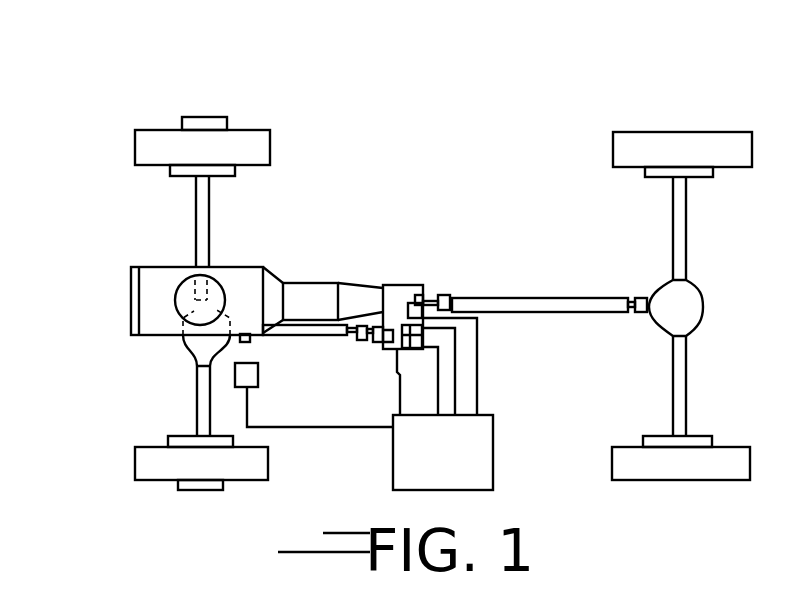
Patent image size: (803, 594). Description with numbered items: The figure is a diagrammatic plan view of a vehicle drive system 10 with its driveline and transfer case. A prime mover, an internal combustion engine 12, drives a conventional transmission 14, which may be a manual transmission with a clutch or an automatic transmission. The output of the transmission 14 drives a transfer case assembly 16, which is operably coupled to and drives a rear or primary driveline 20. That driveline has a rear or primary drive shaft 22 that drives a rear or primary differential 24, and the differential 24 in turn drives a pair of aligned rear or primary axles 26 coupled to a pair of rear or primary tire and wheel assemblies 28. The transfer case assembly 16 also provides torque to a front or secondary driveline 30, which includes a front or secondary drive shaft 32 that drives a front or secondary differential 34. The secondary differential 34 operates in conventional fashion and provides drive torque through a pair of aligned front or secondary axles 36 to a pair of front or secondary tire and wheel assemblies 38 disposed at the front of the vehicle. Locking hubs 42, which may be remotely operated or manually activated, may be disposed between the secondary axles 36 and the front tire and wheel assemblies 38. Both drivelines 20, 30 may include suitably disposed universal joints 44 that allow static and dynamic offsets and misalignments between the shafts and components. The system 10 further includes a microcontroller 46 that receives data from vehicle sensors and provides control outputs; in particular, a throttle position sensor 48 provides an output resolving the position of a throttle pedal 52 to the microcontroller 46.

The vehicle drive system 10 is at (430, 102).
The internal combustion engine 12 is at (233, 280).
The transmission 14 is at (307, 292).
The transfer case assembly 16 is at (400, 277).
The rear or primary driveline 20 is at (582, 212).
The rear or primary drive shaft 22 is at (547, 313).
The rear or primary differential 24 is at (695, 305).
The rear or primary axles 26 is at (688, 212).
The rear or primary tire and wheel assemblies 28 is at (657, 126).
The front or secondary driveline 30 is at (153, 377).
The front or secondary drive shaft 32 is at (328, 337).
The front or secondary differential 34 is at (198, 343).
The front or secondary axles 36 is at (197, 213).
The front or secondary tire and wheel assemblies 38 is at (202, 110).
The locking hubs 42 is at (212, 126).
The universal joints 44 is at (437, 295).
The microcontroller 46 is at (452, 464).
The throttle position sensor 48 is at (314, 395).
The throttle pedal 52 is at (258, 373).